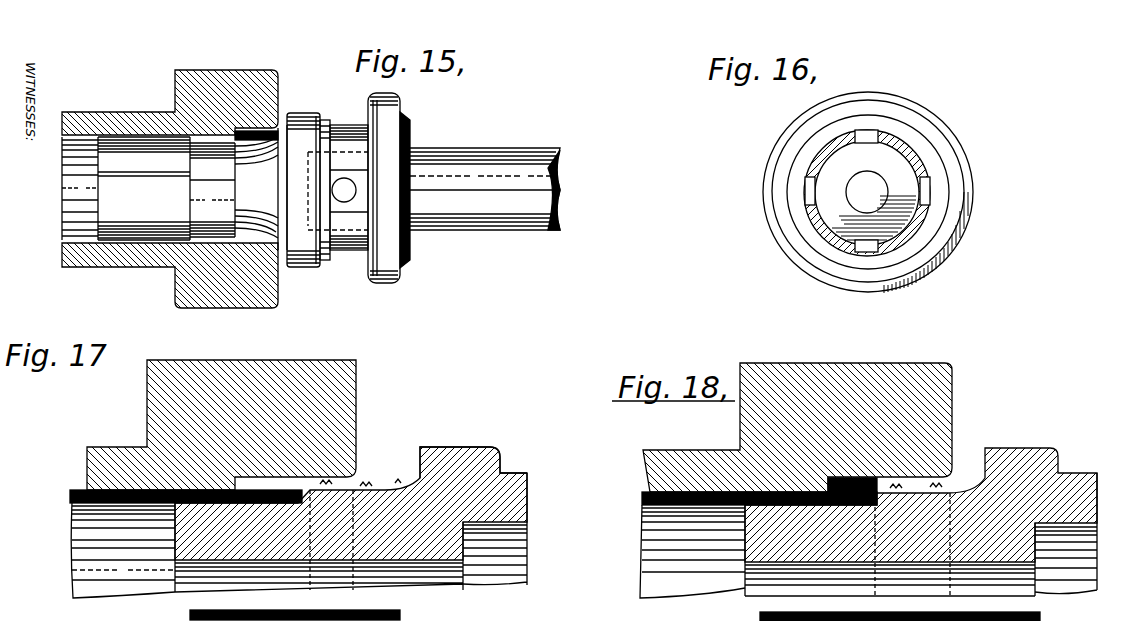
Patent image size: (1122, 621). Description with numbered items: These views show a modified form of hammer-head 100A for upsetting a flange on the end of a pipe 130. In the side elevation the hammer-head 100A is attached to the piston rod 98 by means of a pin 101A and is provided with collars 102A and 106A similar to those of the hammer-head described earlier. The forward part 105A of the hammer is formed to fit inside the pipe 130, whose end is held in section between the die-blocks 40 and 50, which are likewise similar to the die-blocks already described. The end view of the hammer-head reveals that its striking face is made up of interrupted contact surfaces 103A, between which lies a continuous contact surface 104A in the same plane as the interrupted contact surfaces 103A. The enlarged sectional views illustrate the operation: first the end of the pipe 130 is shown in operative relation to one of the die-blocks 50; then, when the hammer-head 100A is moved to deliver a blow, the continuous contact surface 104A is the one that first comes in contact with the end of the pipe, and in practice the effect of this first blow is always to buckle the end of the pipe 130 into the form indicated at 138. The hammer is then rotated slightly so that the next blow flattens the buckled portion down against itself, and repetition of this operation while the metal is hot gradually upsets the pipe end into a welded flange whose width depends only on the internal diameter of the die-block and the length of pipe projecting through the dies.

In FIG. 15, the die-block 50 is at (201, 71).
In FIG. 17, the die-block 50 is at (350, 395).
In FIG. 18, the die-block 50 is at (952, 396).
In FIG. 15, the die-block 40 is at (183, 283).
In FIG. 15, the pipe 130 is at (78, 194).
In FIG. 17, the pipe 130 is at (75, 512).
In FIG. 18, the pipe 130 is at (645, 498).
In FIG. 15, the forward part 105A is at (250, 130).
In FIG. 15, the interrupted contact surfaces 103A is at (238, 187).
In FIG. 16, the interrupted contact surfaces 103A is at (810, 197).
In FIG. 17, the interrupted contact surfaces 103A is at (270, 503).
In FIG. 15, the collar 106A is at (292, 116).
In FIG. 17, the collar 106A is at (457, 460).
In FIG. 15, the pin 101A is at (349, 185).
In FIG. 15, the piston rod 98 is at (510, 164).
In FIG. 15, the hammer-head 100A is at (338, 253).
In FIG. 17, the hammer-head 100A is at (413, 483).
In FIG. 18, the hammer-head 100A is at (975, 478).
In FIG. 15, the collar 102A is at (398, 281).
In FIG. 16, the continuous contact surface 104A is at (833, 230).
In FIG. 17, the continuous contact surface 104A is at (303, 497).
In FIG. 18, the buckled portion of the pipe 138 is at (840, 503).